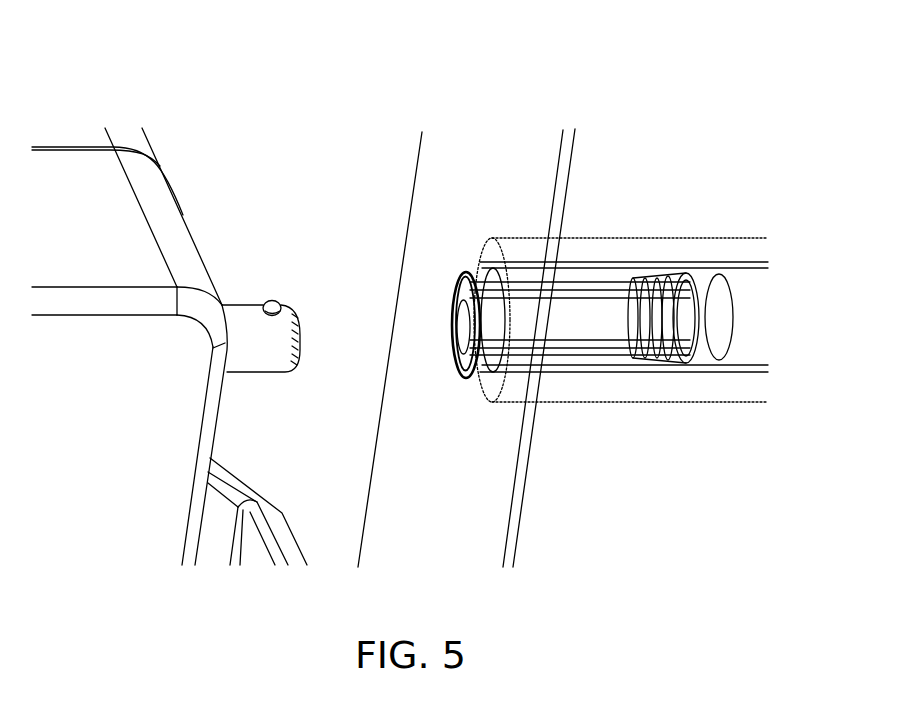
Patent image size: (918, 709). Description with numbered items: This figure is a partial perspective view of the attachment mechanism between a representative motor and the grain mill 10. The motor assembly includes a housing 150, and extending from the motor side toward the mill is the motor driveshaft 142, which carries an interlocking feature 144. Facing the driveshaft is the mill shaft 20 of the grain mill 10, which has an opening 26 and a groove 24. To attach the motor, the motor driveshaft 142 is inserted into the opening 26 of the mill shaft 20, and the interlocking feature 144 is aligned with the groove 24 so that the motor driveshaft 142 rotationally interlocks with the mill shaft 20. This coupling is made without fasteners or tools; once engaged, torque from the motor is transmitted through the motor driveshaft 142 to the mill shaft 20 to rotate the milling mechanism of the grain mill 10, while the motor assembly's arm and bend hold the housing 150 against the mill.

The grain mill 10 is at (487, 173).
The mill shaft 20 is at (453, 278).
The groove 24 is at (453, 298).
The opening 26 is at (463, 330).
The motor driveshaft 142 is at (238, 360).
The interlocking feature 144 is at (273, 301).
The housing 150 is at (85, 158).